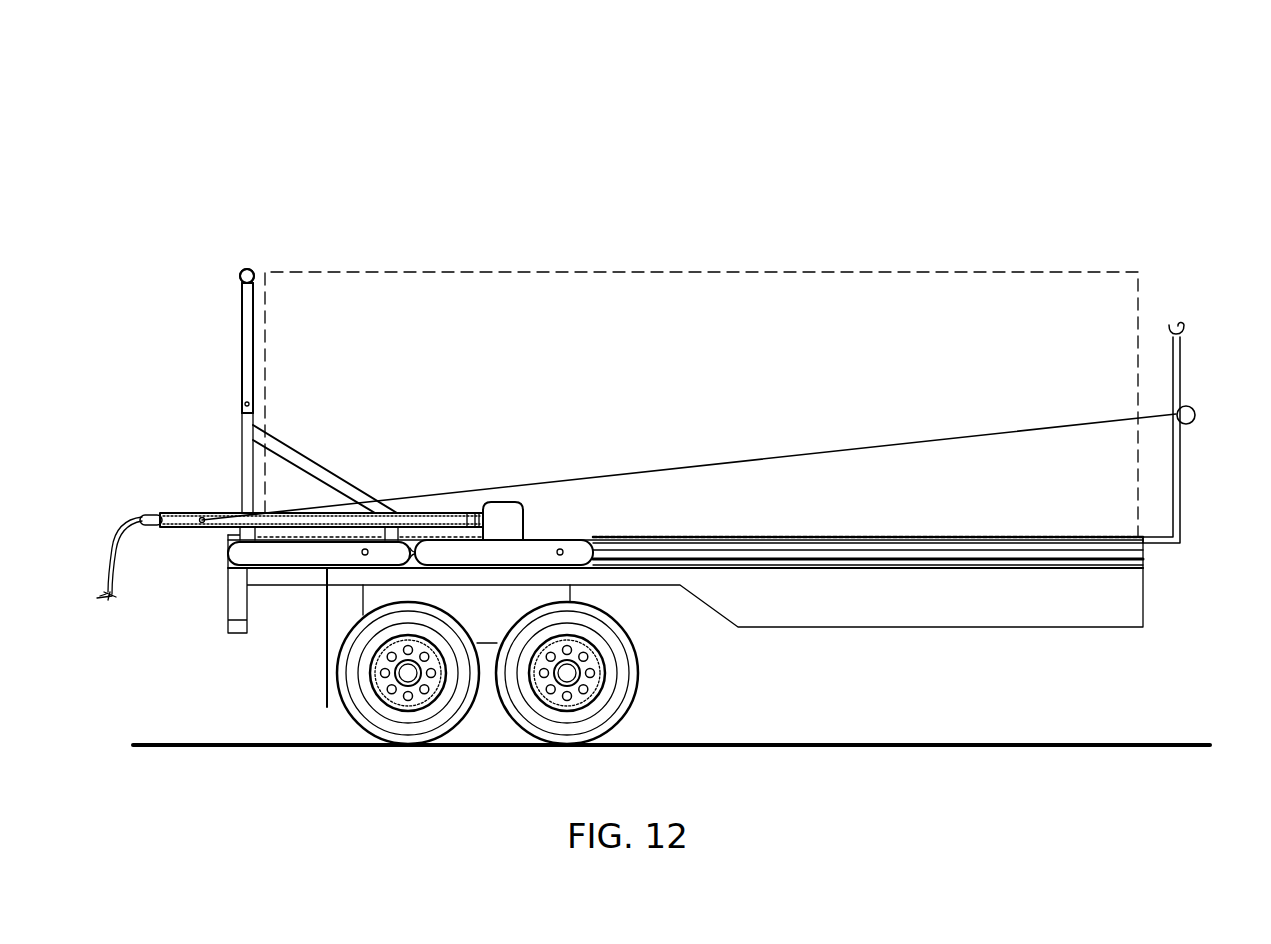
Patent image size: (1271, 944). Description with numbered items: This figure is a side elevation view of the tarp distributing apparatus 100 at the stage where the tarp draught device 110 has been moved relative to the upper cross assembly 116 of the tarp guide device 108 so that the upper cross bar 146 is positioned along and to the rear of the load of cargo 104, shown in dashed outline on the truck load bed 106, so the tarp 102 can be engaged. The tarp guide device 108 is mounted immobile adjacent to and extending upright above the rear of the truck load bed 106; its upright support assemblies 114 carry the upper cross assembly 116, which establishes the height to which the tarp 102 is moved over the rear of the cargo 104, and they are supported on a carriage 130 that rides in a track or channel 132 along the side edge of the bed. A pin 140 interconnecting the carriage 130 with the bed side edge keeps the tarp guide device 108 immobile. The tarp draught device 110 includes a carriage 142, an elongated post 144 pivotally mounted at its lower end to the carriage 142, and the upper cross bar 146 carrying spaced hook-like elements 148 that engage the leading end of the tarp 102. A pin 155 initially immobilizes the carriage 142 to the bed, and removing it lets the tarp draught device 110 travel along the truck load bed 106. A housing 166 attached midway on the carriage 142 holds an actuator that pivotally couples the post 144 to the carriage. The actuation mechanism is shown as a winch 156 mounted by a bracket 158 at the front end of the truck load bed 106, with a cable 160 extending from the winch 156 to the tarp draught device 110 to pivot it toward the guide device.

The tarp distributing apparatus 100 is at (166, 118).
The tarp 102 is at (118, 590).
The load of cargo 104 is at (700, 270).
The truck load bed 106 is at (922, 537).
The tarp guide device 108 is at (236, 263).
The tarp draught device 110 is at (200, 500).
The upright support assembly 114 is at (257, 362).
The upper cross assembly 116 is at (258, 274).
The carriage 130 is at (296, 570).
The track or channel 132 is at (840, 568).
The pin 140 is at (363, 555).
The carriage 142 is at (520, 570).
The elongated post 144 is at (434, 513).
The upper cross bar 146 is at (151, 526).
The element 148 is at (148, 512).
The pin 155 is at (563, 552).
The winch 156 is at (1176, 418).
The bracket 158 is at (1181, 522).
The cable 160 is at (826, 447).
The housing 166 is at (524, 520).